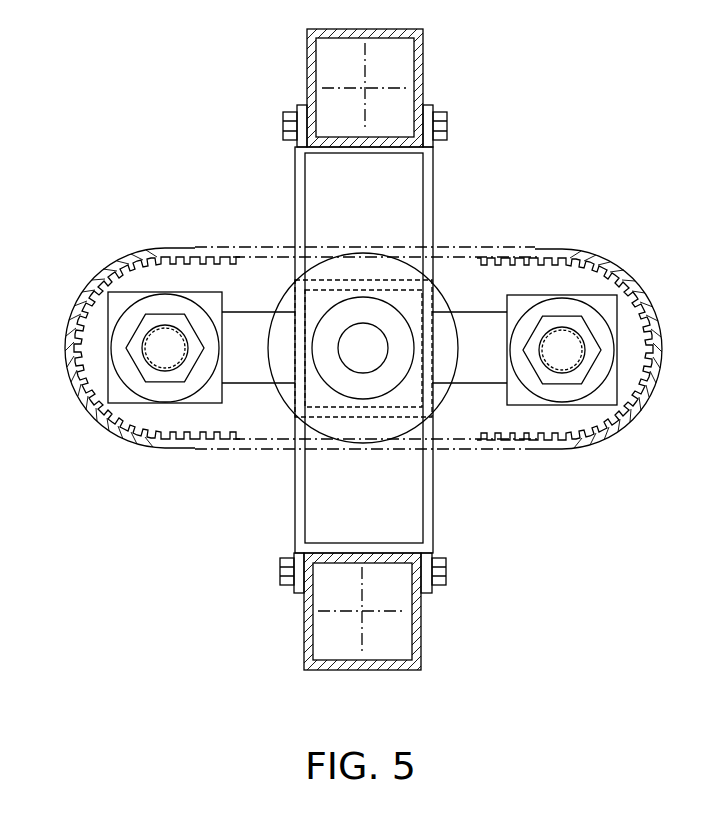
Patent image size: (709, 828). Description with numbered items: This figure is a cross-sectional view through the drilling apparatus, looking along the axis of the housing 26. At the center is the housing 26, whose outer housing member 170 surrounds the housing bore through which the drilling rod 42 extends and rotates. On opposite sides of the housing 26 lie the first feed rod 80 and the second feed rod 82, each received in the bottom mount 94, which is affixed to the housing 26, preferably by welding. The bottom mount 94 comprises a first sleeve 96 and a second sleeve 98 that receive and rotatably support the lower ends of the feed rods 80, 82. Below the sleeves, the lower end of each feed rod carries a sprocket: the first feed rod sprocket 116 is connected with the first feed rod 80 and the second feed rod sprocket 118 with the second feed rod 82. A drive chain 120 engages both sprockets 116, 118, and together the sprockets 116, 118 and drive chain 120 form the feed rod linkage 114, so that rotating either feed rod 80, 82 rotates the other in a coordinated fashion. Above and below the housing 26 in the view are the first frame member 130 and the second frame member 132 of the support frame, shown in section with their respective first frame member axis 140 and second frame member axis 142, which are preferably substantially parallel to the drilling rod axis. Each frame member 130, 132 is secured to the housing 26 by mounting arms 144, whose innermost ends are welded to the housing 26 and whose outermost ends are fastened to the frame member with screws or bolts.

The housing 26 is at (397, 418).
The drilling rod 42 is at (363, 348).
The first feed rod 80 is at (165, 352).
The second feed rod 82 is at (562, 352).
The bottom mount 94 is at (259, 365).
The first sleeve 96 is at (121, 393).
The second sleeve 98 is at (612, 395).
The feed rod linkage 114 is at (387, 304).
The first feed rod sprocket 116 is at (145, 275).
The second feed rod sprocket 118 is at (630, 298).
The drive chain 120 is at (257, 250).
The first frame member 130 is at (423, 66).
The second frame member 132 is at (420, 620).
The first frame member axis 140 is at (365, 88).
The second frame member axis 142 is at (362, 611).
The mounting arms 144 is at (300, 197).
The outer housing member 170 is at (447, 305).